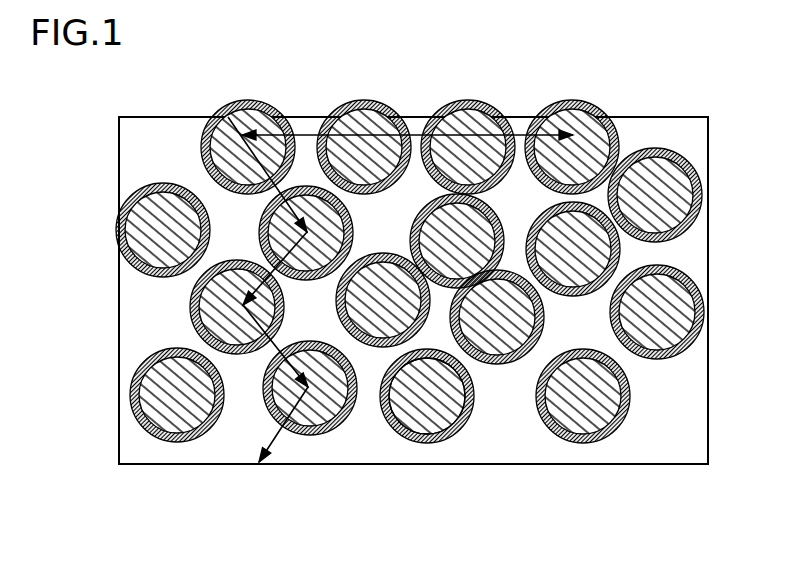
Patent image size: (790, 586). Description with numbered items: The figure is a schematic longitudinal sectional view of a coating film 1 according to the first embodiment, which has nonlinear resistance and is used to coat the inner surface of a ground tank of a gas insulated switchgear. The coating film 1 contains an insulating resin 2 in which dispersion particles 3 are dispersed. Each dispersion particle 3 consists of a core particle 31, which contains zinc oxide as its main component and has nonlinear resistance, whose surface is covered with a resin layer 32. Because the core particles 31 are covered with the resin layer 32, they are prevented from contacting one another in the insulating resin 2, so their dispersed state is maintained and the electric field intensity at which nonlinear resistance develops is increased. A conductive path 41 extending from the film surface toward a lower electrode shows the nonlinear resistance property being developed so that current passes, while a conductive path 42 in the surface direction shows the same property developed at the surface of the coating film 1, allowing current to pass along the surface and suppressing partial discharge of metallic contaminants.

The coating film 1 is at (708, 92).
The insulating resin 2 is at (518, 443).
The dispersion particle 3 is at (465, 523).
The core particle 31 is at (415, 415).
The resin layer 32 is at (440, 432).
The conductive path 41 is at (257, 156).
The conductive path 42 is at (413, 133).